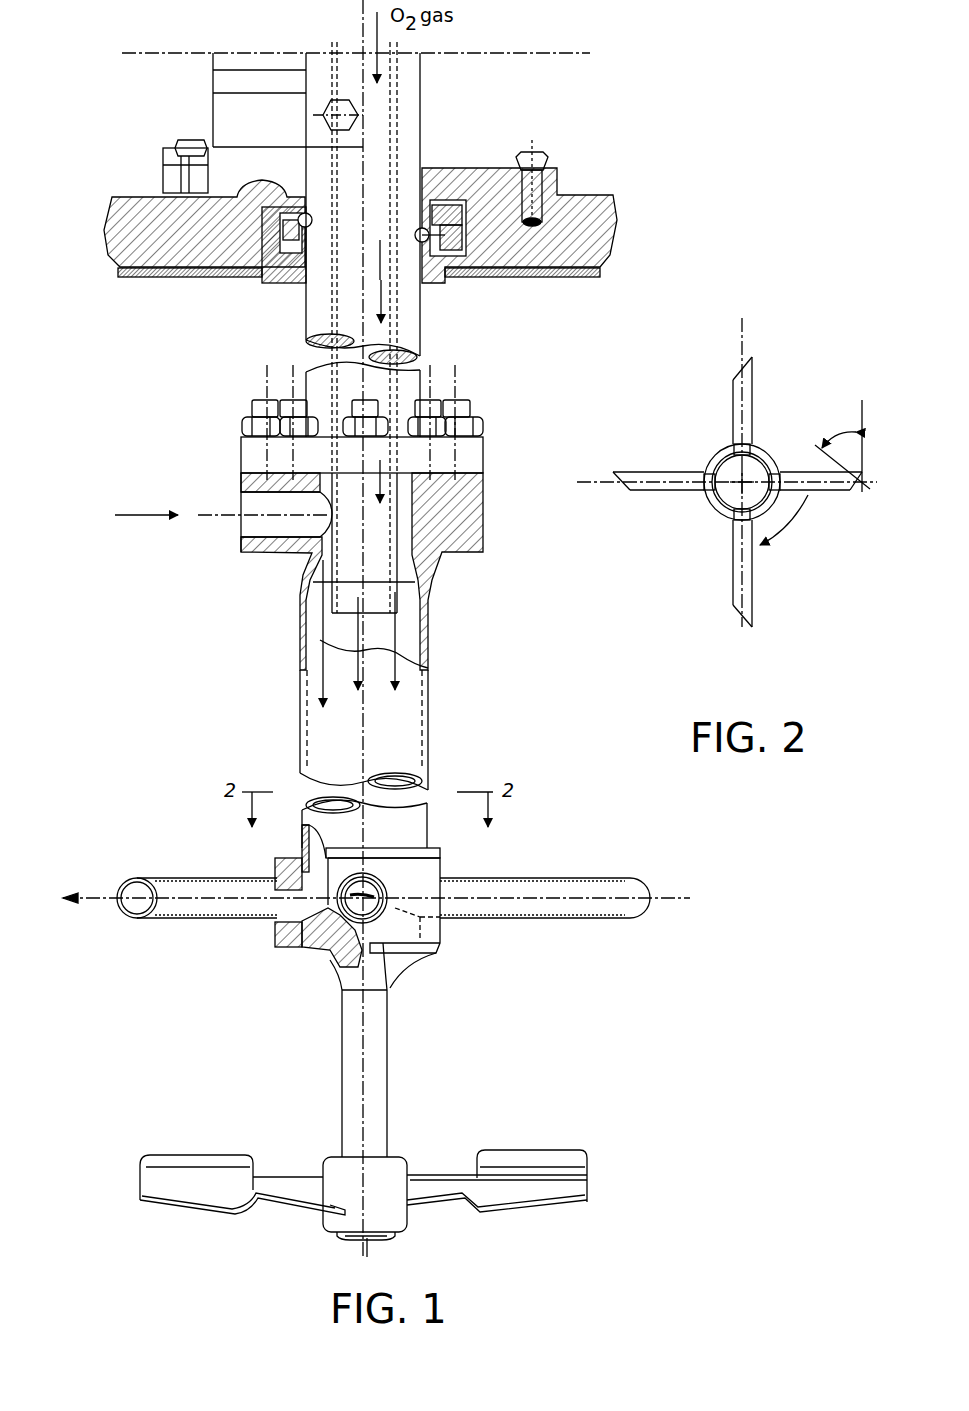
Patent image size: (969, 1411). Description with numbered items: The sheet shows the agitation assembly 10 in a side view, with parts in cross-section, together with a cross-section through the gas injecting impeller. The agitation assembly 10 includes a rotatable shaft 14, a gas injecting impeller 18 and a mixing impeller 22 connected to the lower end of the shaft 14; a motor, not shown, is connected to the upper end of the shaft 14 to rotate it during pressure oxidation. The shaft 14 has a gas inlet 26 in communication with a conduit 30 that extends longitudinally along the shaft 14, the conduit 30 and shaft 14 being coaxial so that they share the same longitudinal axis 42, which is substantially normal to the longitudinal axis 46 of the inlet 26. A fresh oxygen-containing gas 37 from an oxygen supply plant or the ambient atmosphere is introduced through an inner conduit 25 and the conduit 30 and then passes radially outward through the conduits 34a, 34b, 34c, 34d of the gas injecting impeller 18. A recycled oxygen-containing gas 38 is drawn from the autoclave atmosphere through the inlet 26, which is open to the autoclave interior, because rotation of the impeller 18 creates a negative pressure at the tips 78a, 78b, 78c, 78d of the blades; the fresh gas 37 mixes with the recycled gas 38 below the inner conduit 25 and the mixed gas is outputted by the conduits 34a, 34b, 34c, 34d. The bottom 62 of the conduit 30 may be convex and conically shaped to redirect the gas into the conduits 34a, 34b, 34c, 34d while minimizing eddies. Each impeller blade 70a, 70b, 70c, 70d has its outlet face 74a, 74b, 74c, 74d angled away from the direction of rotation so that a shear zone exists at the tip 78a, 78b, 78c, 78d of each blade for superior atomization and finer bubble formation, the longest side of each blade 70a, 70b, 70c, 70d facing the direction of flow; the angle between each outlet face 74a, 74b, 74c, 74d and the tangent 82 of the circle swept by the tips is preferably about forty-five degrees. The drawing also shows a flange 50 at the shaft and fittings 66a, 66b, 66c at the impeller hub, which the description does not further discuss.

In FIG. 1, the agitation assembly 10 is at (532, 602).
In FIG. 1, the rotatable shaft 14 is at (432, 592).
In FIG. 1, the gas injecting impeller 18 is at (575, 877).
In FIG. 1, the mixing impeller 22 is at (587, 1152).
In FIG. 1, the inner conduit 25 is at (378, 242).
In FIG. 1, the gas inlet 26 is at (241, 500).
In FIG. 1, the conduit 30 is at (357, 639).
In FIG. 1, the conduit 34a is at (140, 885).
In FIG. 2, the conduit 34a is at (620, 488).
In FIG. 1, the conduit 34b is at (370, 925).
In FIG. 2, the conduit 34b is at (752, 625).
In FIG. 1, the conduit 34c is at (640, 918).
In FIG. 2, the conduit 34c is at (870, 488).
In FIG. 2, the conduit 34d is at (733, 380).
In FIG. 1, the fresh oxygen-containing gas 37 is at (377, 35).
In FIG. 1, the recycled oxygen-containing gas 38 is at (140, 518).
In FIG. 1, the longitudinal axis 42 is at (365, 721).
In FIG. 1, the longitudinal axis 46 is at (222, 518).
In FIG. 1, the flange plate 50 is at (405, 510).
In FIG. 1, the bottom 62 is at (405, 908).
In FIG. 2, the bottom 62 is at (738, 492).
In FIG. 1, the first fitting 66a is at (245, 897).
In FIG. 1, the second fitting 66b is at (330, 937).
In FIG. 1, the third fitting 66c is at (605, 893).
In FIG. 1, the impeller blade 70a is at (165, 920).
In FIG. 2, the impeller blade 70a is at (665, 472).
In FIG. 1, the impeller blade 70b is at (387, 995).
In FIG. 2, the impeller blade 70b is at (733, 565).
In FIG. 1, the impeller blade 70c is at (567, 918).
In FIG. 2, the impeller blade 70c is at (822, 490).
In FIG. 2, the impeller blade 70d is at (752, 420).
In FIG. 2, the outlet face 74a is at (638, 490).
In FIG. 2, the outlet face 74b is at (752, 590).
In FIG. 2, the outlet face 74c is at (862, 474).
In FIG. 2, the outlet face 74d is at (752, 358).
In FIG. 2, the tip 78a is at (620, 472).
In FIG. 2, the tip 78b is at (735, 605).
In FIG. 2, the tip 78c is at (858, 492).
In FIG. 2, the tip 78d is at (752, 362).
In FIG. 2, the tangent 82 is at (862, 425).